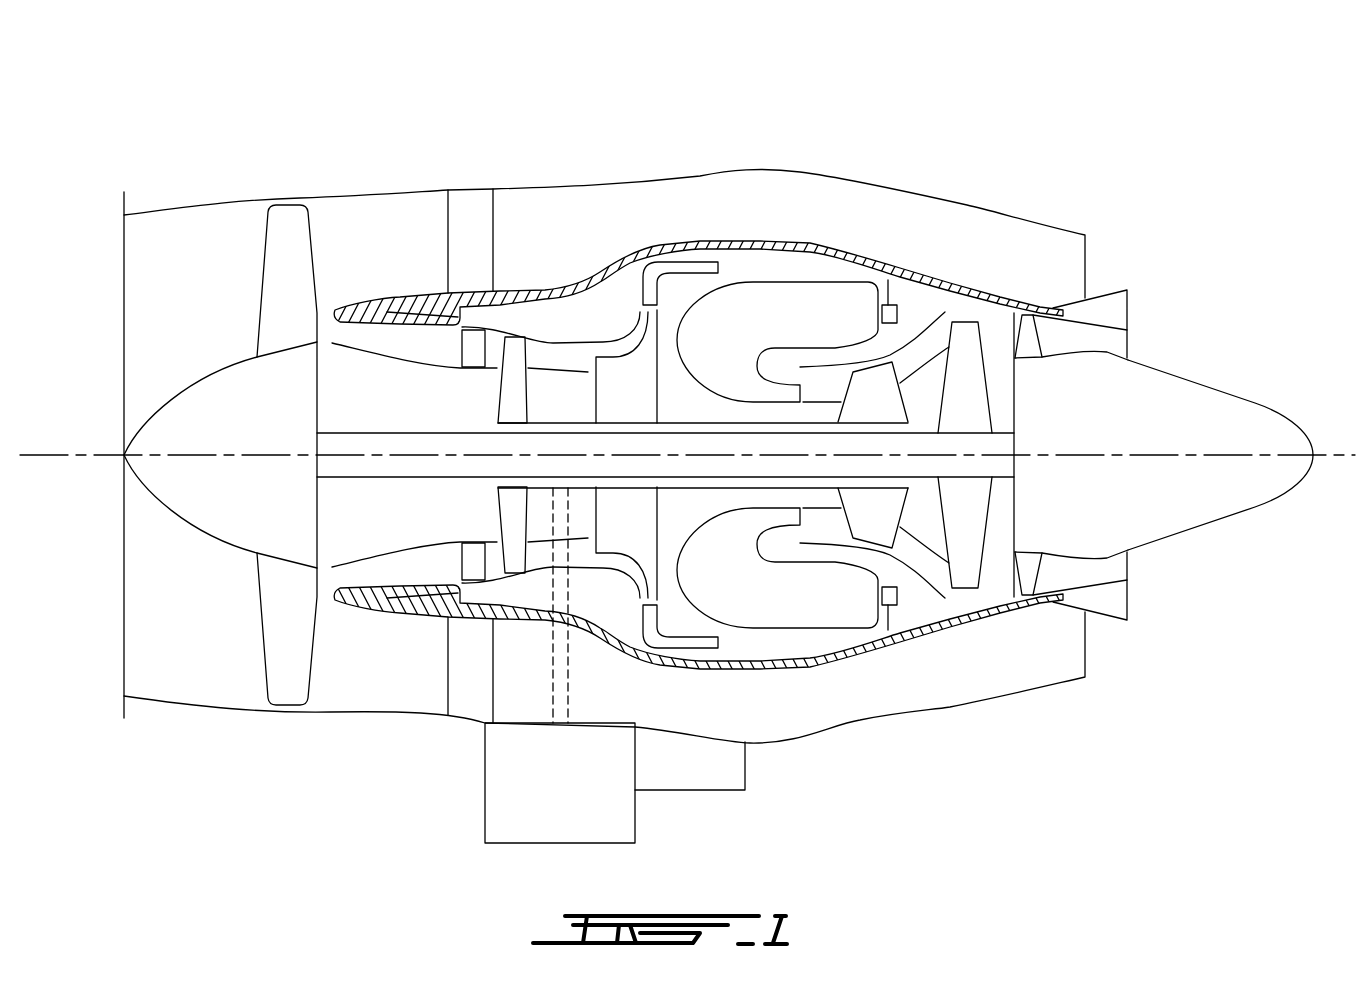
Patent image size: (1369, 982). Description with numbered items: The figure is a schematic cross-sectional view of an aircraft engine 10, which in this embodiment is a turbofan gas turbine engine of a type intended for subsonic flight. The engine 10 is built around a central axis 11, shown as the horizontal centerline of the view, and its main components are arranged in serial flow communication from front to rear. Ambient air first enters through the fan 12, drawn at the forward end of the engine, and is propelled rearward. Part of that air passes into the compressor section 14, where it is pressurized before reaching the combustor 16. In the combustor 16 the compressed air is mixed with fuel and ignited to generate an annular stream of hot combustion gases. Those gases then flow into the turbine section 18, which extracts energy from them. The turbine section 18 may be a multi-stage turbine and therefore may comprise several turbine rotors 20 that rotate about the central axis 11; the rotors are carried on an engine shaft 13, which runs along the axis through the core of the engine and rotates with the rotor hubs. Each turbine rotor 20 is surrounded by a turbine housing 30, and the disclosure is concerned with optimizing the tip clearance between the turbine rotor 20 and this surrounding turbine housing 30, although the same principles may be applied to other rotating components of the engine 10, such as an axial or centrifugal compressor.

The aircraft engine 10 is at (1176, 157).
The central axis 11 is at (1353, 455).
The fan 12 is at (282, 617).
The engine shaft 13 is at (818, 488).
The compressor section 14 is at (549, 348).
The combustor 16 is at (780, 305).
The turbine section 18 is at (920, 543).
The turbine rotor 20 is at (886, 365).
The turbine housing 30 is at (863, 365).